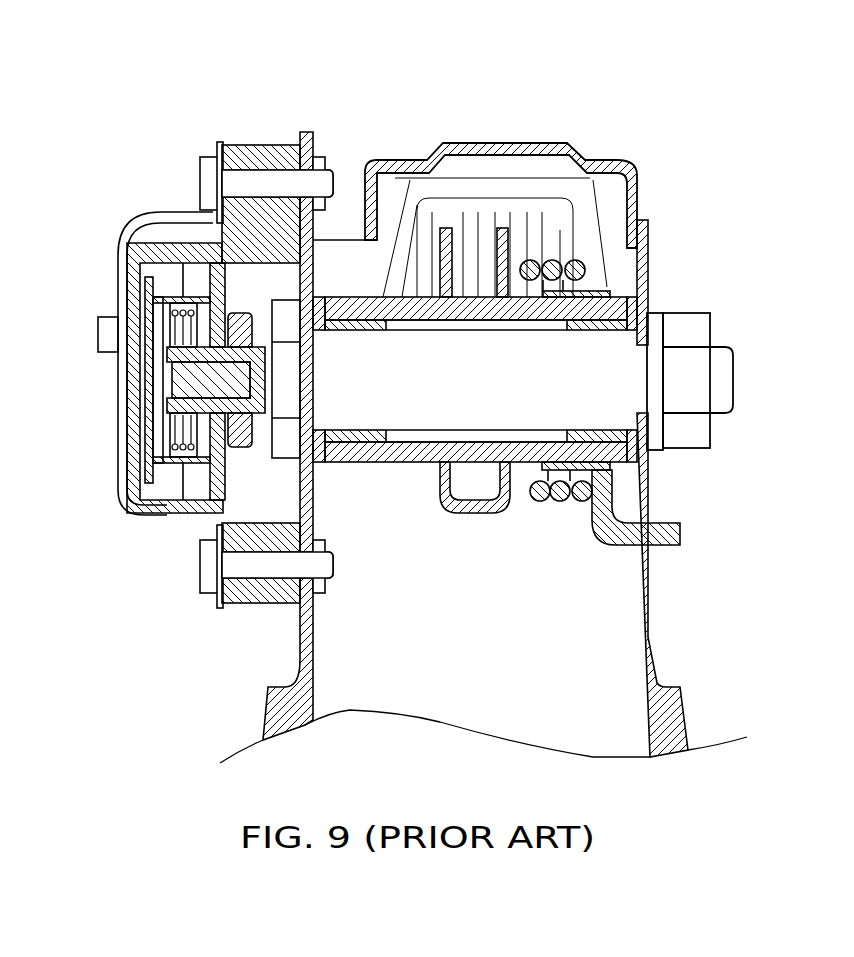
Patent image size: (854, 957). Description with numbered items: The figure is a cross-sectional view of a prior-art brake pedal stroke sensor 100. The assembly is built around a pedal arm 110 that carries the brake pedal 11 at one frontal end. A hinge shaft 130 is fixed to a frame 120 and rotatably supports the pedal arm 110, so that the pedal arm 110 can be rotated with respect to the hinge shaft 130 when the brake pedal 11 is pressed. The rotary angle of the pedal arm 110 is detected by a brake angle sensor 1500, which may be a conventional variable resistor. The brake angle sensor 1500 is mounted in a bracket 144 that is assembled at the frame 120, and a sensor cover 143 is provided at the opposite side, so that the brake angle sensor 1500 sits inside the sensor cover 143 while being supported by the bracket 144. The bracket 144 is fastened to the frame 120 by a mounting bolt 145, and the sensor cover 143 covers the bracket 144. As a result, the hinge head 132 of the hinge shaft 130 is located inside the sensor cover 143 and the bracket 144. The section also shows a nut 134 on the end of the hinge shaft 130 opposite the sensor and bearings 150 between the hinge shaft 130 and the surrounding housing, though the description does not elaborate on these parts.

The brake pedal stroke sensor 100 is at (424, 72).
The brake pedal 11 is at (520, 183).
The pedal arm 110 is at (476, 513).
The frame 120 is at (477, 142).
The hinge shaft 130 is at (623, 395).
The hinge head 132 is at (290, 310).
The nut 134 is at (686, 313).
The sensor cover 143 is at (148, 515).
The bracket 144 is at (260, 608).
The mounting bolt 145 is at (240, 183).
The bearing 150 is at (577, 258).
The brake angle sensor 1500 is at (212, 380).